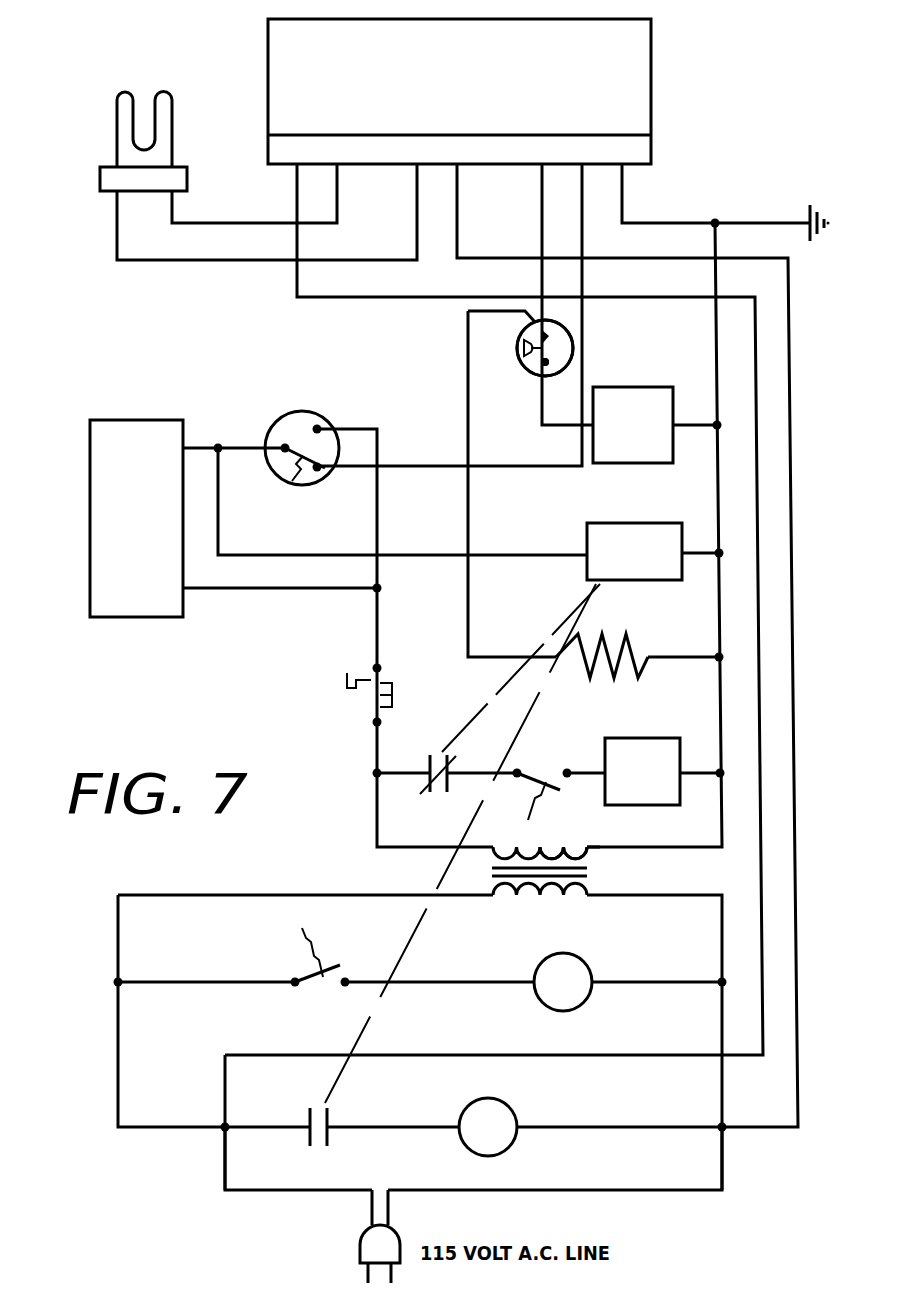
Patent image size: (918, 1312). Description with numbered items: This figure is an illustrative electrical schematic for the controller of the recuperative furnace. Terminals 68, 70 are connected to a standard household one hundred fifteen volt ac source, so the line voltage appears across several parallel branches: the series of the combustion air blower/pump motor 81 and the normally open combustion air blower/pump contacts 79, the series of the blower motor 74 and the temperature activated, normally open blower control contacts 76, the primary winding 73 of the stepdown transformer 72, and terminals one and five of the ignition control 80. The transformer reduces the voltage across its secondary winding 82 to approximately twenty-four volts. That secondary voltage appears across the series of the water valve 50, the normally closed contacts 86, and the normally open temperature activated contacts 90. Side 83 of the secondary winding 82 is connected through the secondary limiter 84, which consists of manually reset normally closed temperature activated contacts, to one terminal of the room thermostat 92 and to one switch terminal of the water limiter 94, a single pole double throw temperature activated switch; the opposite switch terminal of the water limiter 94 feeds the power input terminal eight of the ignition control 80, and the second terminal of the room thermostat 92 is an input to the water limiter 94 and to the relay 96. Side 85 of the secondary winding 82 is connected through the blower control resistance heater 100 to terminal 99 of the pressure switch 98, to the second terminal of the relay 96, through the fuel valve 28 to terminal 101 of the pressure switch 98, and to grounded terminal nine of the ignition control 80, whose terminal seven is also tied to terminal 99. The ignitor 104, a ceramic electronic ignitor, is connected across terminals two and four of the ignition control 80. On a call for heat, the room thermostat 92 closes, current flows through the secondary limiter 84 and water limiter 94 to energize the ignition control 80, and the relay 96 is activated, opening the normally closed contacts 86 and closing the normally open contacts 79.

The ignition control 80 is at (652, 95).
The ignitor 104 is at (173, 102).
The terminal of pressure switch 99 is at (530, 327).
The pressure switch 98 is at (530, 368).
The terminal of pressure switch 101 is at (535, 375).
The fuel valve 28 is at (652, 387).
The room thermostat 92 is at (173, 420).
The water limiter 94 is at (306, 413).
The relay 96 is at (630, 522).
The blower control resistance heater 100 is at (607, 636).
The secondary limiter 84 is at (348, 693).
The normally closed contacts 86 is at (440, 795).
The normally open temperature activated contacts 90 is at (545, 776).
The water valve 50 is at (637, 737).
The side of secondary winding 83 is at (497, 847).
The secondary winding 82 is at (557, 848).
The side of secondary winding 85 is at (588, 845).
The stepdown transformer 72 is at (585, 875).
The primary winding 73 is at (595, 870).
The blower motor 74 is at (593, 962).
The blower control contacts 76 is at (322, 985).
The combustion air blower/pump motor 81 is at (512, 1103).
The combustion air blower/pump contacts 79 is at (316, 1144).
The terminal 68 is at (224, 1162).
The terminal 70 is at (722, 1163).